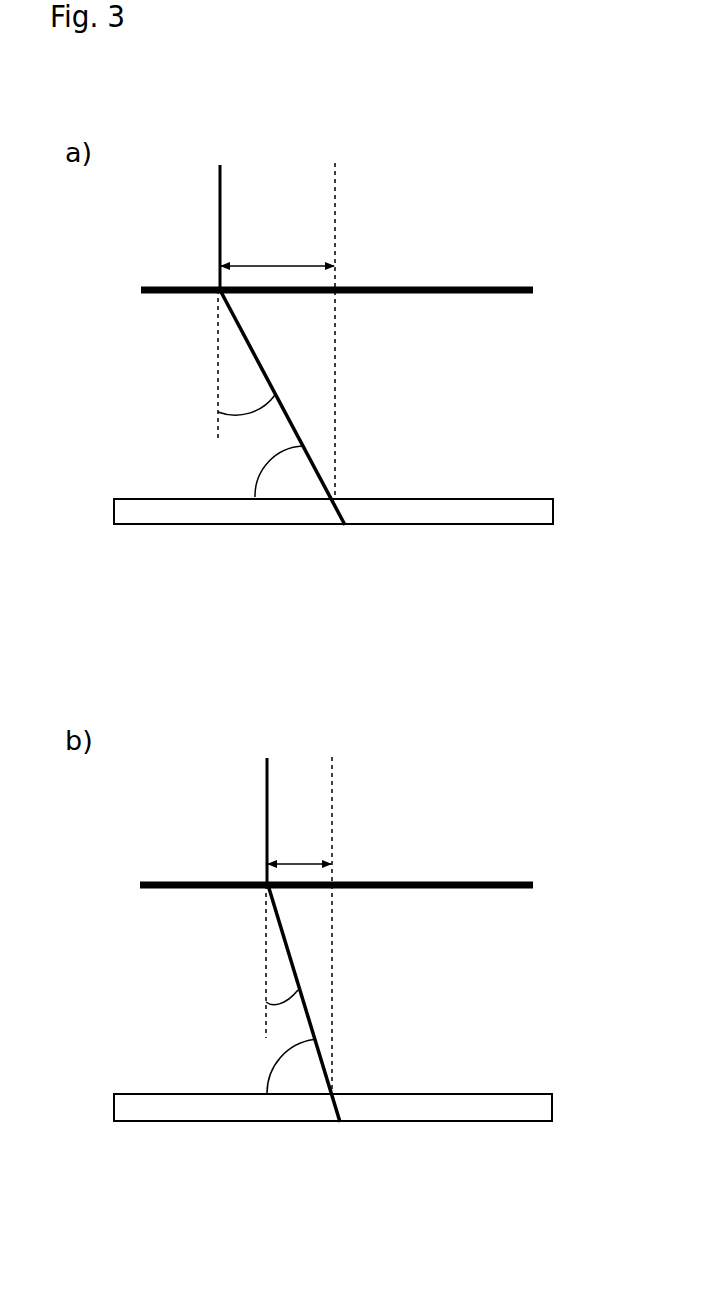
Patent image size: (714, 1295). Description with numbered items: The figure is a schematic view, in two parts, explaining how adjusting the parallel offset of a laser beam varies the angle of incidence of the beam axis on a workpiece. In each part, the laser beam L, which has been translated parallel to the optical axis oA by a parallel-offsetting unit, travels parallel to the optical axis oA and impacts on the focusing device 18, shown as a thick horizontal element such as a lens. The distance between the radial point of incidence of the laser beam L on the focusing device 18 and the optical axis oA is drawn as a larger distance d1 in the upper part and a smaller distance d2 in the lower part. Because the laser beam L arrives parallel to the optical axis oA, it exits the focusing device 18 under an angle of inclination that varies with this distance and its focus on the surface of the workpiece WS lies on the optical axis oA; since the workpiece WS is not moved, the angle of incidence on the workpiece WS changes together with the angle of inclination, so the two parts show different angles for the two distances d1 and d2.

The focusing device 18 is at (358, 588).
The laser beam L is at (268, 643).
The optical axis oA is at (333, 611).
The workpiece WS is at (363, 810).
The distance of the radial point of incidence to the optical axis d1 is at (277, 248).
The distance of the radial point of incidence to the optical axis d2 is at (299, 847).